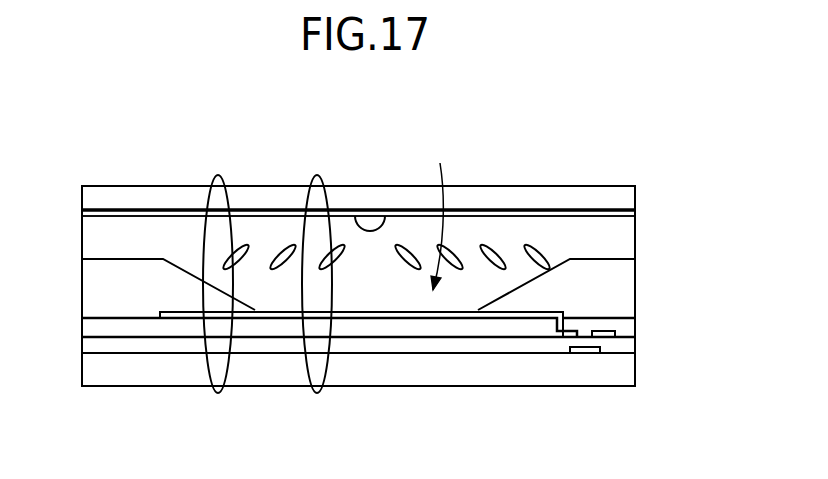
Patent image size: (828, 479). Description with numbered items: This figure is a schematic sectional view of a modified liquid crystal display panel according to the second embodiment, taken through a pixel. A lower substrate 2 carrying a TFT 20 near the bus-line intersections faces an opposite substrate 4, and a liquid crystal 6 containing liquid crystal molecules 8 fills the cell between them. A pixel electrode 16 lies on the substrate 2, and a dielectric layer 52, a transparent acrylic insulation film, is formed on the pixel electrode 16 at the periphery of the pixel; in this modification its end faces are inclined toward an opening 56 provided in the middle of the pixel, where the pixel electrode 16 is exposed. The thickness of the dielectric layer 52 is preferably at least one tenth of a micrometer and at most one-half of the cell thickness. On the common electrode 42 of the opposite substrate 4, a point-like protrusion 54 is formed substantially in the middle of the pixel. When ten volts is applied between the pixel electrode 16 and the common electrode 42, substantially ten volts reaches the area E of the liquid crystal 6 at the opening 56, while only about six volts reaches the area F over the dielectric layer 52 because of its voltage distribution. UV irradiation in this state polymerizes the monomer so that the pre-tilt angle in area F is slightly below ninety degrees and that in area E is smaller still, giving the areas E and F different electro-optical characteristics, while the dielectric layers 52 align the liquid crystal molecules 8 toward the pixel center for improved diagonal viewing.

The array substrate 2 is at (643, 259).
The opposite substrate 4 is at (634, 193).
The liquid crystal 6 is at (634, 233).
The liquid crystal molecules 8 is at (447, 251).
The pixel electrode 16 is at (373, 311).
The TFT 20 is at (565, 368).
The common electrode 42 is at (634, 213).
The dielectric layer 52 is at (580, 268).
The point-like protrusion 54 is at (370, 220).
The opening 56 is at (441, 213).
The area F is at (218, 301).
The area E is at (317, 301).